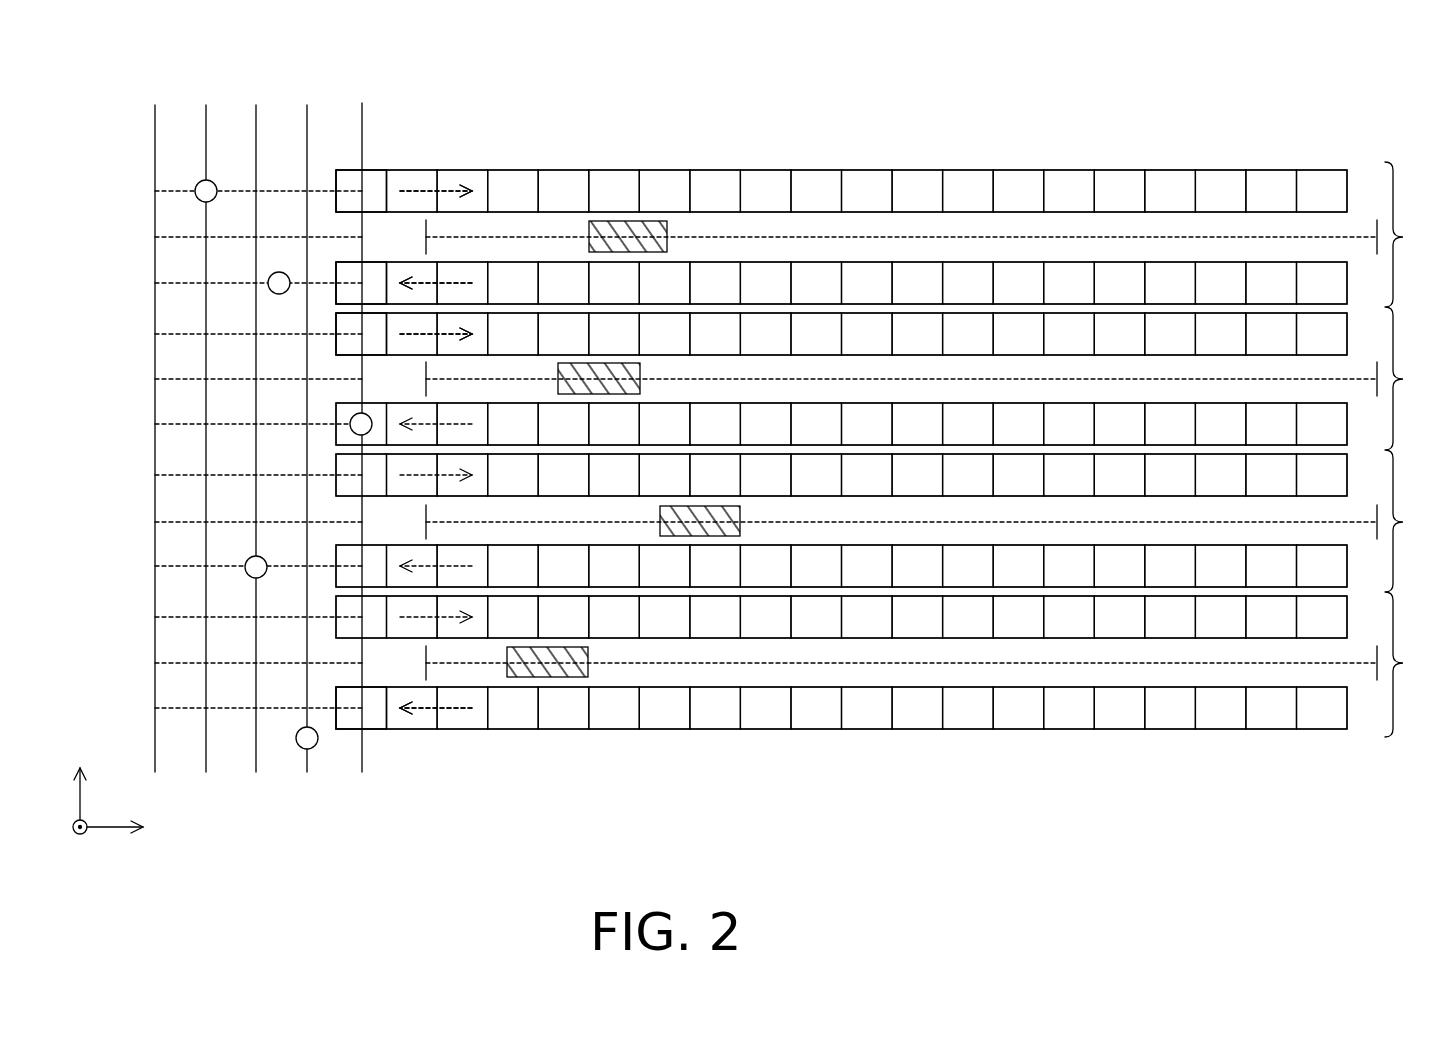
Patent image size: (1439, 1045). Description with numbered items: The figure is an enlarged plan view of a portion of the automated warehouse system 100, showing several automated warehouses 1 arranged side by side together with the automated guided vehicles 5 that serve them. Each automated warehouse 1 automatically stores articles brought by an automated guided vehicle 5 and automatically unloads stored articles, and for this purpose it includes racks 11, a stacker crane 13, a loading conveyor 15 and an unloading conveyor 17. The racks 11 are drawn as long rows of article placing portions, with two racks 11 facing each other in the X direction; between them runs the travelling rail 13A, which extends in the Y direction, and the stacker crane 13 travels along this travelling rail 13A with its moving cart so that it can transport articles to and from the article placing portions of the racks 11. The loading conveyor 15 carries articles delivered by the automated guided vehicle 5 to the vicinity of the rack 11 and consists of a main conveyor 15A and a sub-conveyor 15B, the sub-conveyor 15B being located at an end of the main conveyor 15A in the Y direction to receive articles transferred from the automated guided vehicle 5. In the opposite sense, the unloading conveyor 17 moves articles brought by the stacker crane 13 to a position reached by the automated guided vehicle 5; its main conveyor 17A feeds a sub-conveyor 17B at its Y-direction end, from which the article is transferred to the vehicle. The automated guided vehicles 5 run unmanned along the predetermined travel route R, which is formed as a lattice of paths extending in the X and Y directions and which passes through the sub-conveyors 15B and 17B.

The automated warehouse 1 is at (927, 449).
The automated guided vehicle 5 is at (198, 183).
The rack 11 is at (1165, 343).
The stacker crane 13 is at (660, 221).
The travelling rail 13A is at (1208, 237).
The loading conveyor 15 is at (442, 96).
The main conveyor 15A is at (463, 178).
The sub-conveyor 15B is at (373, 178).
The unloading conveyor 17 is at (399, 251).
The main conveyor 17A is at (455, 272).
The sub-conveyor 17B is at (372, 278).
The automated warehouse system 100 is at (823, 118).
The travel route R is at (155, 590).